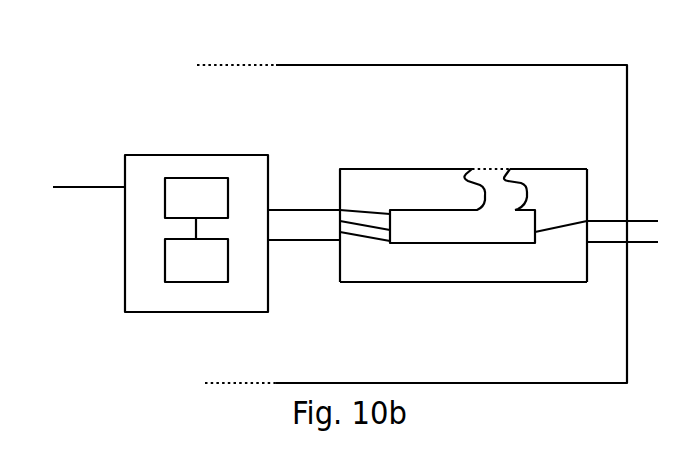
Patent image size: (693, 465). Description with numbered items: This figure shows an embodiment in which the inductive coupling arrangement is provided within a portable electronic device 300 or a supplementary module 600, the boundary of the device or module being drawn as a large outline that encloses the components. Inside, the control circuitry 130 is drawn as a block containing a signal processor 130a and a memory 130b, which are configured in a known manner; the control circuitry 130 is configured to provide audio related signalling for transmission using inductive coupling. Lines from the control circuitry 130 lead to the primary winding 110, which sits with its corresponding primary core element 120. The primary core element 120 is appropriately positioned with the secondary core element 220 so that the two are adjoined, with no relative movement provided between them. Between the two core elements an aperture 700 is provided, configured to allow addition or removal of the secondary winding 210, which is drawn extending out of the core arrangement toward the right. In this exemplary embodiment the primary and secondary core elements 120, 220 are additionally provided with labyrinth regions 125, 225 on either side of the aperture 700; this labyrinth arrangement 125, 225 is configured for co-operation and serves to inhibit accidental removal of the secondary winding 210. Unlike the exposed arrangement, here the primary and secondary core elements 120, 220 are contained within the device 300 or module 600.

The portable electronic device 300 is at (412, 198).
The supplementary module 600 is at (342, 75).
The control circuitry 130 is at (187, 166).
The signal processor 130a is at (223, 214).
The memory 130b is at (223, 277).
The primary core element 120 is at (372, 260).
The secondary core element 220 is at (548, 260).
The primary winding 110 is at (380, 211).
The labyrinth arrangement 125 is at (470, 167).
The labyrinth arrangement 225 is at (538, 168).
The aperture 700 is at (494, 179).
The secondary winding 210 is at (563, 215).